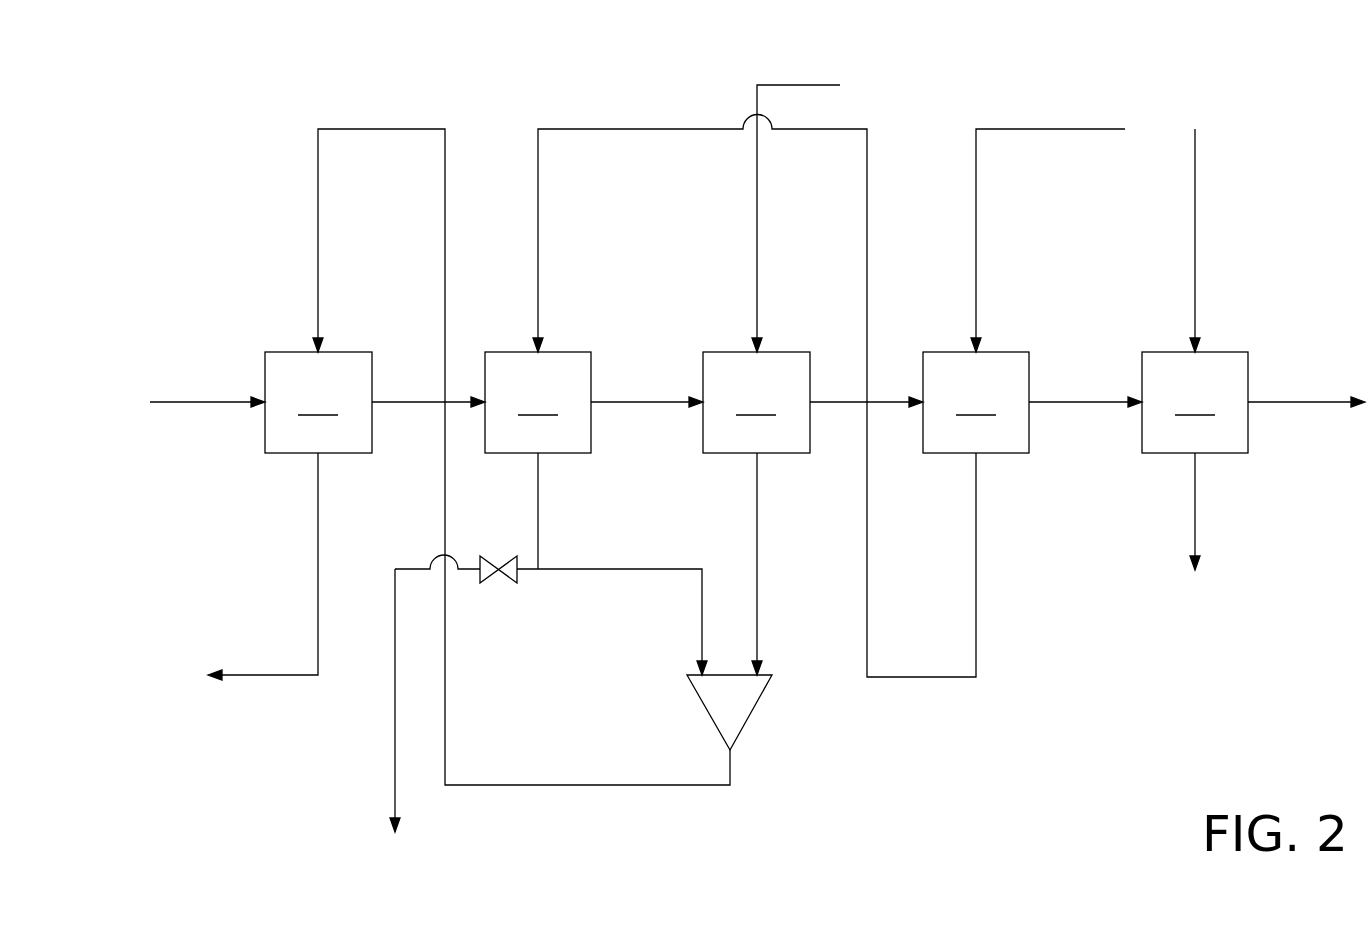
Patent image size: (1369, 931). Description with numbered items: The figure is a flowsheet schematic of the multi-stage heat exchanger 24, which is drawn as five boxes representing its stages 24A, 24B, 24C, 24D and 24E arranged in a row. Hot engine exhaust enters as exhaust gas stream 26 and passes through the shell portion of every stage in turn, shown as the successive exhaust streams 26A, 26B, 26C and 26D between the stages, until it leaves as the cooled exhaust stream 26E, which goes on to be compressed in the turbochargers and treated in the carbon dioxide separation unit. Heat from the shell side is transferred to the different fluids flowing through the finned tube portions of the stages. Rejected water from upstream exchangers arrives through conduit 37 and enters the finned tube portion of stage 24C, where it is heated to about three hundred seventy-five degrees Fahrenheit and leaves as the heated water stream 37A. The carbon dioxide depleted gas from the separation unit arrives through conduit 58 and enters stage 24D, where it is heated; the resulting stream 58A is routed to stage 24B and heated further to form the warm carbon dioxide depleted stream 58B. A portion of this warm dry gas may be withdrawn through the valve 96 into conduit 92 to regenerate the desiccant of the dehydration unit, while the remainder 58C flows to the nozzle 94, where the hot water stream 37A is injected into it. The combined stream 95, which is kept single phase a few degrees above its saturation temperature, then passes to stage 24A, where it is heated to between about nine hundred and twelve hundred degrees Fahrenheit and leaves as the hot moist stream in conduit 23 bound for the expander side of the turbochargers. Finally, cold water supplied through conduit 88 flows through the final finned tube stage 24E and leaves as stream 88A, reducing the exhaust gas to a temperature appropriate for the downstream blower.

The multi-stage heat exchanger 24 is at (178, 183).
The first stage 24A is at (318, 402).
The second stage 24B is at (538, 402).
The third stage 24C is at (756, 402).
The fourth stage 24D is at (976, 402).
The final finned tube stage 24E is at (1195, 402).
The exhaust gas stream 26 is at (181, 400).
The exhaust gas stream after first stage 26A is at (406, 400).
The exhaust gas stream after second stage 26B is at (646, 400).
The exhaust gas stream after third stage 26C is at (835, 400).
The exhaust gas stream after fourth stage 26D is at (1073, 400).
The cooled exhaust gas stream 26E is at (1293, 400).
The conduit 37 is at (813, 85).
The heated water stream 37A is at (757, 521).
The conduit 58 is at (1062, 129).
The CO2-depleted gas stream 58A is at (976, 550).
The warm CO2-depleted stream 58B is at (538, 503).
The remainder of CO2-depleted stream 58C is at (622, 569).
The conduit 88 is at (1195, 217).
The cold water outlet stream 88A is at (1195, 508).
The conduit 92 is at (395, 740).
The nozzle 94 is at (750, 712).
The combined stream 95 is at (557, 785).
The valve 96 is at (498, 556).
The conduit 23 is at (255, 675).